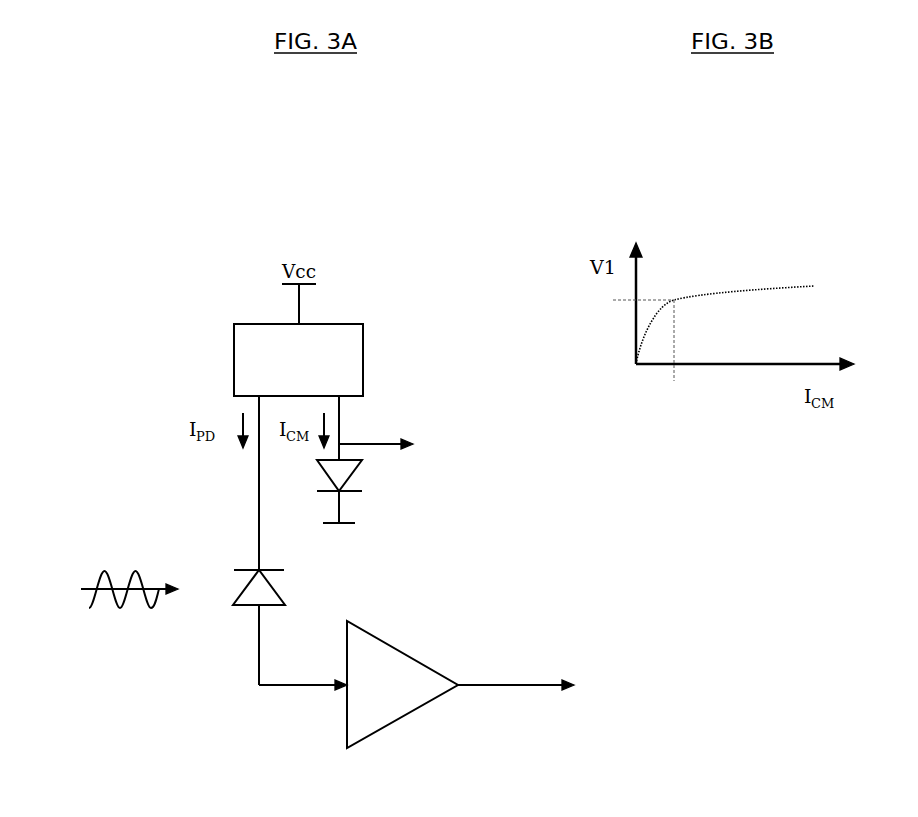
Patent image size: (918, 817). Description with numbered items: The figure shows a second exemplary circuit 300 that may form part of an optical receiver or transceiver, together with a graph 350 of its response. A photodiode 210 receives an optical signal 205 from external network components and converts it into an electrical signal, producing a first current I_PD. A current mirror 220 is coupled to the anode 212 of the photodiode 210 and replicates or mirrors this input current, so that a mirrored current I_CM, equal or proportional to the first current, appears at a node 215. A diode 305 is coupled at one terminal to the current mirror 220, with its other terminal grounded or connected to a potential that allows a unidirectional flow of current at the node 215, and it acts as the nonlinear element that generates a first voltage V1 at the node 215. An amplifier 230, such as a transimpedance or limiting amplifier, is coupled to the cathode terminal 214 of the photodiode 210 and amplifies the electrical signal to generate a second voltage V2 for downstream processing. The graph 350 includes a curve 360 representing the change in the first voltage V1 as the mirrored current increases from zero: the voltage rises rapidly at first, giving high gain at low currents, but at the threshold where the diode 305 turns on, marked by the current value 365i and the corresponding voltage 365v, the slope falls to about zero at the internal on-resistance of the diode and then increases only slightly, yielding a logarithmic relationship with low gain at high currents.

In FIG. 3A, the circuit 300 is at (220, 195).
In FIG. 3A, the current mirror 220 is at (232, 348).
In FIG. 3A, the node 215 is at (387, 440).
In FIG. 3A, the diode 305 is at (358, 480).
In FIG. 3A, the optical signal 205 is at (122, 572).
In FIG. 3A, the photodiode 210 is at (272, 578).
In FIG. 3A, the anode 212 is at (255, 567).
In FIG. 3A, the cathode terminal 214 is at (253, 605).
In FIG. 3A, the amplifier 230 is at (418, 655).
In FIG. 3B, the graph 350 is at (748, 172).
In FIG. 3B, the curve 360 is at (713, 290).
In FIG. 3B, the voltage 365v is at (621, 299).
In FIG. 3B, the mirrored current value 365i is at (676, 353).